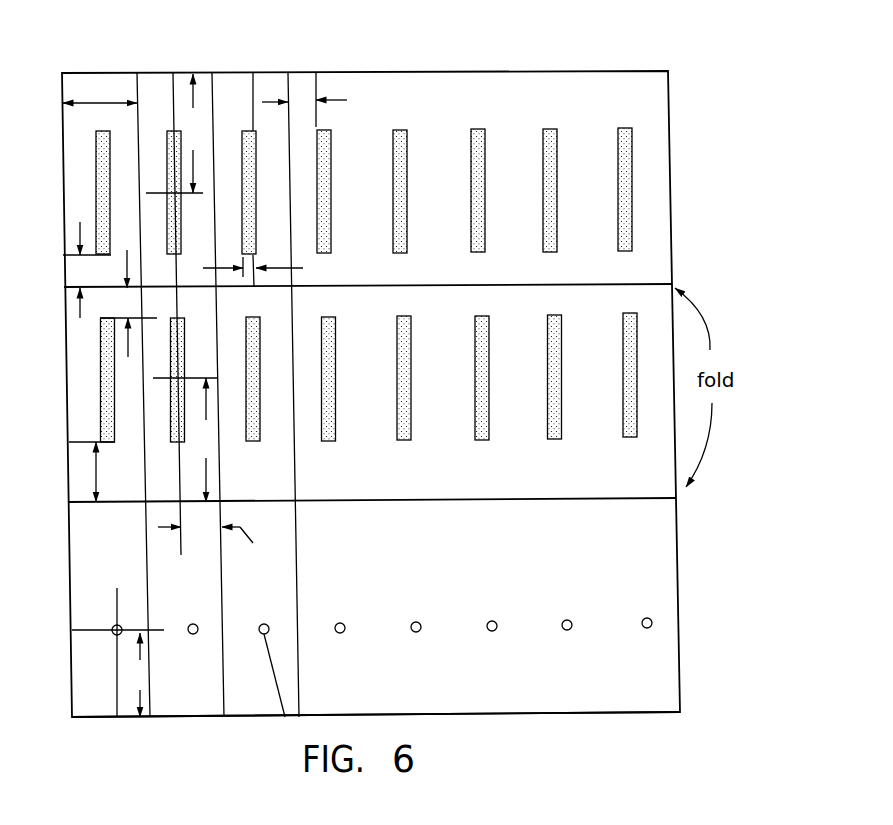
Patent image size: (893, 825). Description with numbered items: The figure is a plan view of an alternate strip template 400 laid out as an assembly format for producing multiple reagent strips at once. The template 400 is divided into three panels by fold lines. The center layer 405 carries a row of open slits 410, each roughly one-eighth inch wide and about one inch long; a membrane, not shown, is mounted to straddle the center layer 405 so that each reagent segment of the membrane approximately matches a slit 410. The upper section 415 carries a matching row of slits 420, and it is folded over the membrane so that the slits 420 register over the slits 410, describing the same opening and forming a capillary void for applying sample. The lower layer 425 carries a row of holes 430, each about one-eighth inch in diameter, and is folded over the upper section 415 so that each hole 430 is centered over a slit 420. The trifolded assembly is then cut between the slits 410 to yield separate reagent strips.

The template 400 is at (592, 66).
The center layer 405 is at (372, 396).
The slits 410 is at (637, 423).
The upper section 415 is at (397, 314).
The slits 420 is at (632, 188).
The lower layer 425 is at (412, 619).
The holes 430 is at (652, 623).